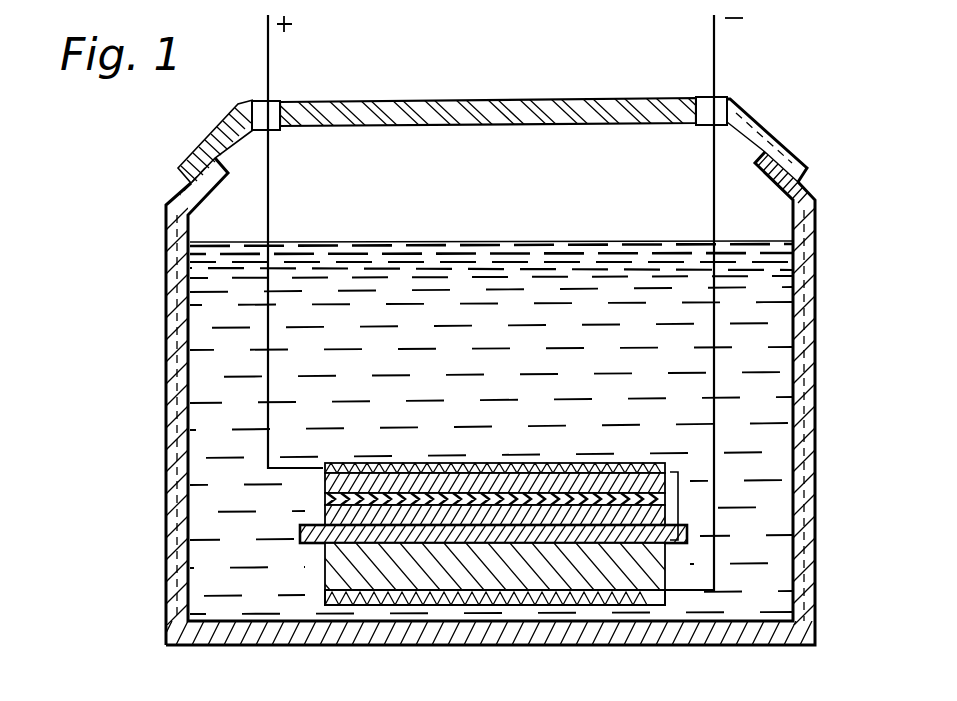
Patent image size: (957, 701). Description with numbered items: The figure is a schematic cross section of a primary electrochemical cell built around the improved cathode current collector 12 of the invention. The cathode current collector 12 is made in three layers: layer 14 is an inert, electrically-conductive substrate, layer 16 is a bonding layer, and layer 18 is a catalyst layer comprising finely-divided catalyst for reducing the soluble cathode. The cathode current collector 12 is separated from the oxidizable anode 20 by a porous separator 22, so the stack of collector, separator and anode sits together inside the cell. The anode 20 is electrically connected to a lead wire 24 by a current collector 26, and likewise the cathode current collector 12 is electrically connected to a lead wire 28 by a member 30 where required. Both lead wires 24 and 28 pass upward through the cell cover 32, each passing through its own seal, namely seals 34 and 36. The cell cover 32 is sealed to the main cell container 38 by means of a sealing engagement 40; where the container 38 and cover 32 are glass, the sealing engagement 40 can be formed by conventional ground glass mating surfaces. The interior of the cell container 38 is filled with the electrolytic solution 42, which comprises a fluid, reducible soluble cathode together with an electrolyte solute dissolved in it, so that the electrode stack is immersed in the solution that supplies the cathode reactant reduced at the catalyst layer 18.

The cathode current collector 12 is at (680, 497).
The inert electrically-conductive substrate layer 14 is at (322, 483).
The bonding layer 16 is at (322, 503).
The catalyst layer 18 is at (322, 516).
The oxidizable anode 20 is at (376, 572).
The porous separator 22 is at (300, 534).
The lead wire 24 is at (712, 192).
The current collector 26 is at (657, 607).
The lead wire 28 is at (270, 212).
The member 30 is at (340, 463).
The cell cover 32 is at (425, 100).
The seal 34 is at (700, 97).
The seal 36 is at (272, 100).
The main cell container 38 is at (180, 358).
The sealing engagement 40 is at (192, 158).
The electrolytic solution 42 is at (538, 272).